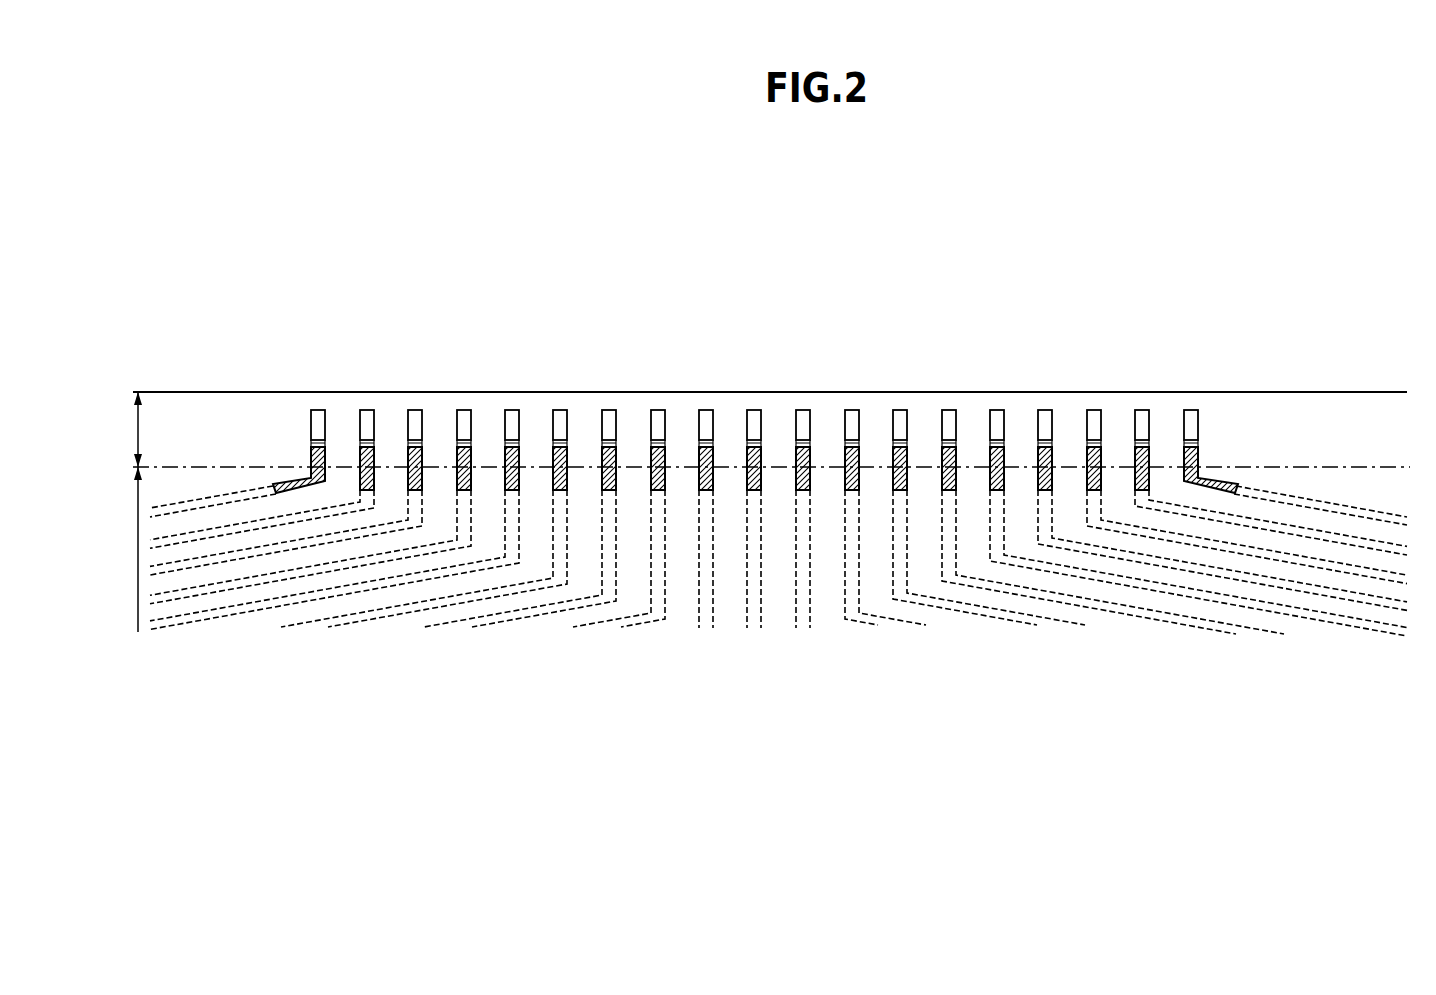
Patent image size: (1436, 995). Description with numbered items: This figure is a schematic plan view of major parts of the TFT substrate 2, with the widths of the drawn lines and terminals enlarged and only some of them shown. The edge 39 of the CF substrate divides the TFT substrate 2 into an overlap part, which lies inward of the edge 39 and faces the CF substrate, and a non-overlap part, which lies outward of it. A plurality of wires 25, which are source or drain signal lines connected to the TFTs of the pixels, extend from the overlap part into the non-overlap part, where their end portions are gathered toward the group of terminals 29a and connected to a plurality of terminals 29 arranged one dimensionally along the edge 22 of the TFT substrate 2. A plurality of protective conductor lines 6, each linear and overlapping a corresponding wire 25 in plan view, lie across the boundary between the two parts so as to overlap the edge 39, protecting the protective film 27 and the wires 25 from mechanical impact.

The TFT substrate 2 is at (992, 306).
The protective conductor line 6 is at (862, 460).
The edge of the TFT substrate 22 is at (733, 390).
The wire 25 is at (762, 605).
The protective film 27 is at (730, 612).
The terminal 29 is at (414, 420).
The group of terminals 29a is at (537, 414).
The edge of the CF substrate 39 is at (1400, 466).